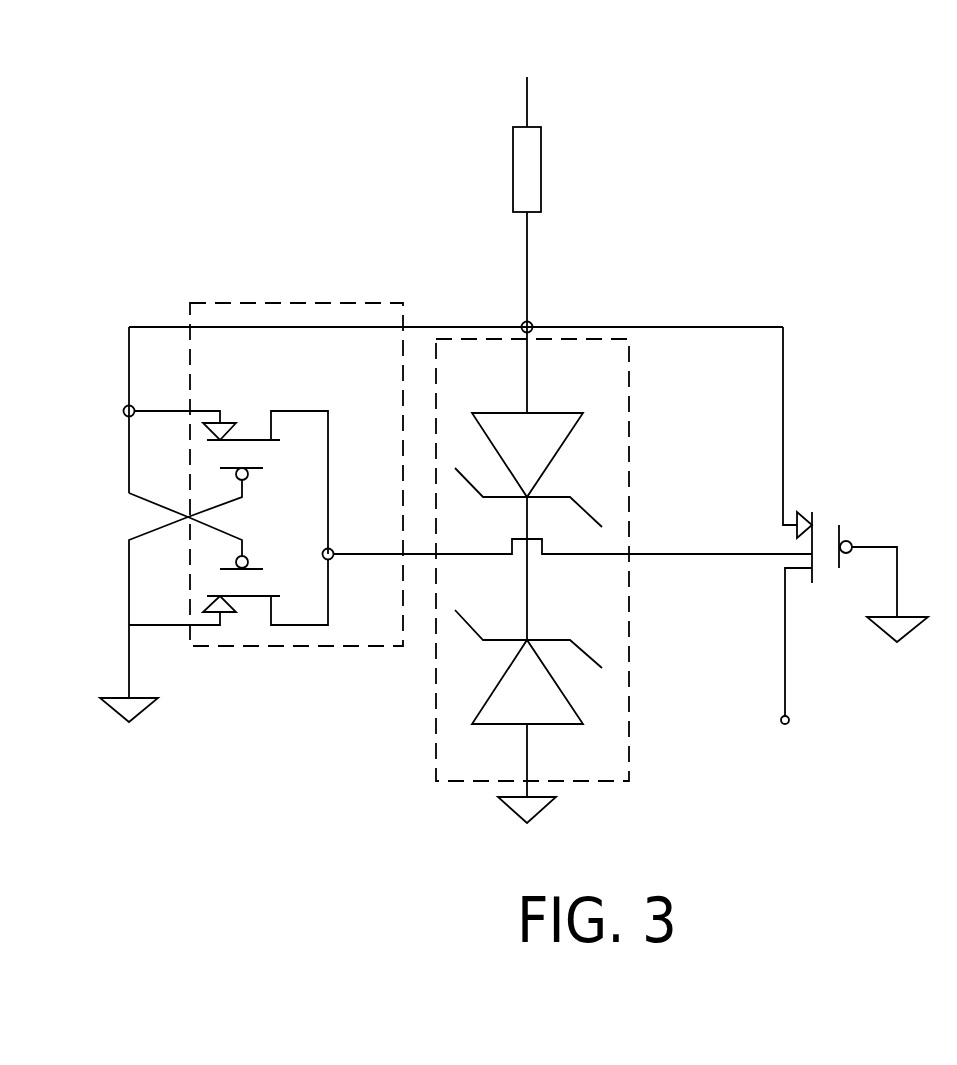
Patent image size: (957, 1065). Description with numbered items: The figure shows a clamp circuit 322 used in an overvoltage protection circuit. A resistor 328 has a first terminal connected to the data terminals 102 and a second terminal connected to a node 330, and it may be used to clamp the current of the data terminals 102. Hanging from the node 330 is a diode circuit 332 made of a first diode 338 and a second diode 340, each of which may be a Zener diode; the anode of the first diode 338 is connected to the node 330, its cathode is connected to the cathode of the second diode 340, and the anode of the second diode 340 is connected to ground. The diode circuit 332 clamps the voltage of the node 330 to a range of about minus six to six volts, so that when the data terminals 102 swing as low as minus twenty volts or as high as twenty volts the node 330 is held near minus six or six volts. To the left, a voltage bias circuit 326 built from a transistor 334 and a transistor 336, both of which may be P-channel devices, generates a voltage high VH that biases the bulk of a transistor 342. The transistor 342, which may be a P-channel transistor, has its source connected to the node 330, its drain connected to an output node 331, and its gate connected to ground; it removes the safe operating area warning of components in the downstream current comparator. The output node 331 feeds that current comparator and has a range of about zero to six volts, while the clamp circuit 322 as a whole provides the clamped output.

The clamp circuit 322 is at (117, 146).
The data terminals 102 is at (526, 74).
The resistor 328 is at (541, 183).
The node 330 is at (531, 322).
The voltage bias circuit 326 is at (243, 303).
The transistor 334 is at (262, 408).
The transistor 336 is at (251, 628).
The diode circuit 332 is at (629, 366).
The first diode 338 is at (550, 458).
The second diode 340 is at (553, 703).
The transistor 342 is at (841, 512).
The output node 331 is at (790, 718).